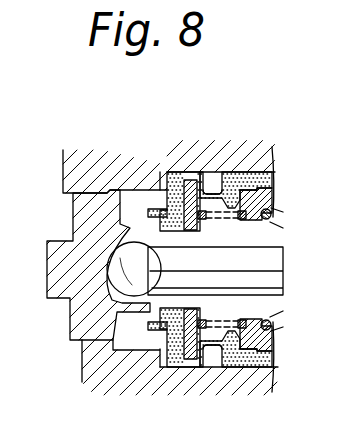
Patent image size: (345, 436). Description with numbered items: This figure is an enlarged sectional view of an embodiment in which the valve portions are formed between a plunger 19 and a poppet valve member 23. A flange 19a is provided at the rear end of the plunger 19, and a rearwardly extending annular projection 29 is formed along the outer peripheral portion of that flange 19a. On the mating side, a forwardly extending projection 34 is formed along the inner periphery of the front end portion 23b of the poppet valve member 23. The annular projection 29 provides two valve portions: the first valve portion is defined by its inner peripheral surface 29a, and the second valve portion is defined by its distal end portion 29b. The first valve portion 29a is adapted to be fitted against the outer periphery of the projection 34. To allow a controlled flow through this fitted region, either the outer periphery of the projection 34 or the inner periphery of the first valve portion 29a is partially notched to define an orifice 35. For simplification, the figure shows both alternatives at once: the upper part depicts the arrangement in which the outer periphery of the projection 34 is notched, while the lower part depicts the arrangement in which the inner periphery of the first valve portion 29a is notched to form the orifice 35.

The plunger 19 is at (62, 273).
The flange 19a is at (72, 207).
The poppet valve member 23 is at (230, 165).
The front end portion 23b is at (212, 178).
The annular projection 29 is at (160, 200).
The inner peripheral surface 29a is at (148, 212).
The distal end portion 29b is at (168, 172).
The forwardly extending projection 34 is at (157, 240).
The orifice 35 is at (147, 182).